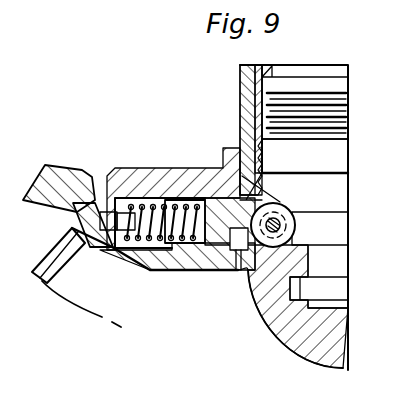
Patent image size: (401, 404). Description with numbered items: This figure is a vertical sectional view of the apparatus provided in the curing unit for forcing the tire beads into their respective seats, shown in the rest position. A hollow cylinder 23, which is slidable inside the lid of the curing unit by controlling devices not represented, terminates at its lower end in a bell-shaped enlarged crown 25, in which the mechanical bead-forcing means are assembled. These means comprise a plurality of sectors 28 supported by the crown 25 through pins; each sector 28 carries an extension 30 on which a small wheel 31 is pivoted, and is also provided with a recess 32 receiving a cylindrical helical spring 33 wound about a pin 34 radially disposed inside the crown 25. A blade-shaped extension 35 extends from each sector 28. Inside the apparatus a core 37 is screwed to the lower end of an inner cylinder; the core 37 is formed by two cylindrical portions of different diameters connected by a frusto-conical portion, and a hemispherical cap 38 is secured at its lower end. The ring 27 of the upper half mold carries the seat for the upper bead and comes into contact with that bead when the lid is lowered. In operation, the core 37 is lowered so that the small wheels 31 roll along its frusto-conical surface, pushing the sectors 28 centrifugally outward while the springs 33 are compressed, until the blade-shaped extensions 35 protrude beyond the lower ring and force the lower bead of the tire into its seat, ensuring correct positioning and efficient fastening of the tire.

The hollow cylinder 23 is at (251, 130).
The bell-shaped enlarged crown 25 is at (122, 181).
The ring 27 is at (72, 233).
The sector 28 is at (270, 186).
The extension 30 is at (217, 262).
The small wheel 31 is at (296, 228).
The recess 32 is at (198, 205).
The cylindrical helical spring 33 is at (160, 203).
The pin 34 is at (97, 253).
The blade-shaped extension 35 is at (147, 271).
The core 37 is at (335, 153).
The hemispherical cap 38 is at (241, 78).